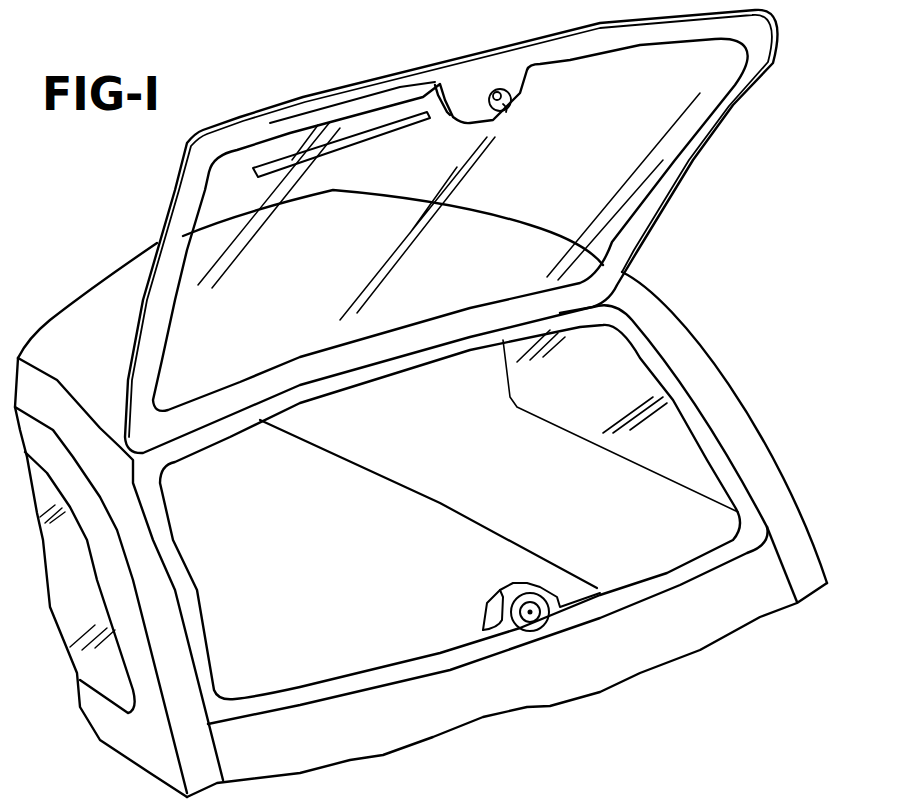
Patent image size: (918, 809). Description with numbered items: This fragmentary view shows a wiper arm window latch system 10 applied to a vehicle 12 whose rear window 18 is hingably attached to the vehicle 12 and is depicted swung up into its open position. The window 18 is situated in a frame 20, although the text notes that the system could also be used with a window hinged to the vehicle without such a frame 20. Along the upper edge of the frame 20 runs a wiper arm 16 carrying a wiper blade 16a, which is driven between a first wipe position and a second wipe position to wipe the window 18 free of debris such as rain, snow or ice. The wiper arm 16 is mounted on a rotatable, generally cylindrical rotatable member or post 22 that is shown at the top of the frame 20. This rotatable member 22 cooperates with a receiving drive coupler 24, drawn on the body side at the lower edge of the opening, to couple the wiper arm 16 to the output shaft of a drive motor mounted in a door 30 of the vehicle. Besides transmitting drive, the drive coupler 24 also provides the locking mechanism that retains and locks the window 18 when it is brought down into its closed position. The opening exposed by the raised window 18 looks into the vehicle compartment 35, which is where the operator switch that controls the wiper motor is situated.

The wiper arm window latch system 10 is at (476, 78).
The vehicle 12 is at (93, 297).
The wiper arm 16 is at (378, 108).
The wiper blade 16a is at (330, 142).
The rear window 18 is at (693, 100).
The frame 20 is at (693, 156).
The rotatable member or post 22 is at (505, 88).
The receiving drive coupler 24 is at (513, 610).
The door 30 is at (670, 645).
The vehicle compartment 35 is at (508, 467).